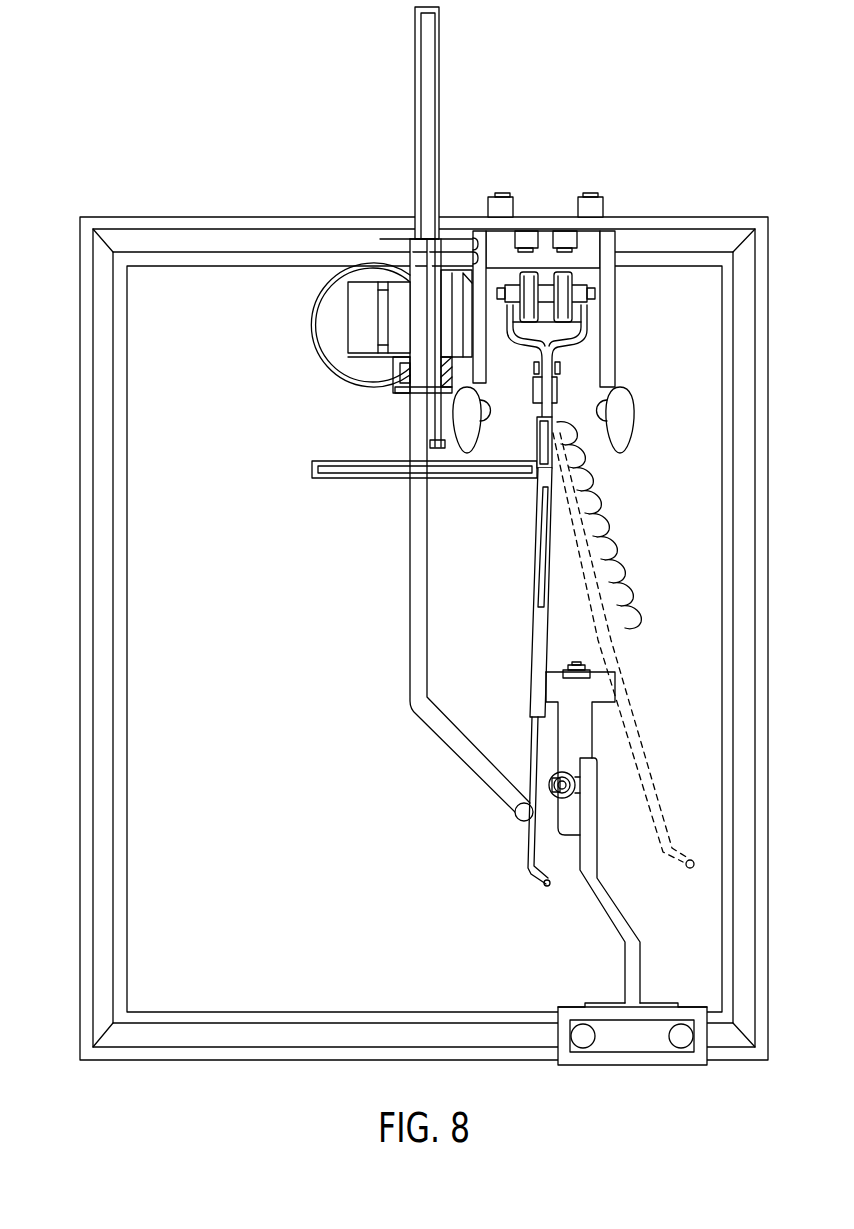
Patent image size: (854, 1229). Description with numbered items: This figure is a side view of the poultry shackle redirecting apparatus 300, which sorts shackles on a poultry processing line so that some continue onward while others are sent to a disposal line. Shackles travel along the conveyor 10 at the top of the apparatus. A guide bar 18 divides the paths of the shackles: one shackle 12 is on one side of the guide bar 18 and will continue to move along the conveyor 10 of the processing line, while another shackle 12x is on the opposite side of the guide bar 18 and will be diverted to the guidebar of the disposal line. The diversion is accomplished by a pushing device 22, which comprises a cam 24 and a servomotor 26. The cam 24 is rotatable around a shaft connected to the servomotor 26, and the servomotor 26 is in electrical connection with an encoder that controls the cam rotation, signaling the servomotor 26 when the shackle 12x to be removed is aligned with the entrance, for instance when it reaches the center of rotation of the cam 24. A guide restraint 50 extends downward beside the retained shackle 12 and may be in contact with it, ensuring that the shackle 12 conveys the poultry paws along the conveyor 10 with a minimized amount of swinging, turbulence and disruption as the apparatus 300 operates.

The poultry shackle redirecting apparatus 300 is at (686, 73).
The conveyor 10 is at (545, 221).
The shackle 12 is at (530, 885).
The shackle 12x is at (650, 772).
The guide bar 18 is at (602, 687).
The pushing device 22 is at (314, 349).
The cam 24 is at (312, 468).
The servomotor 26 is at (357, 300).
The guide restraint 50 is at (440, 741).